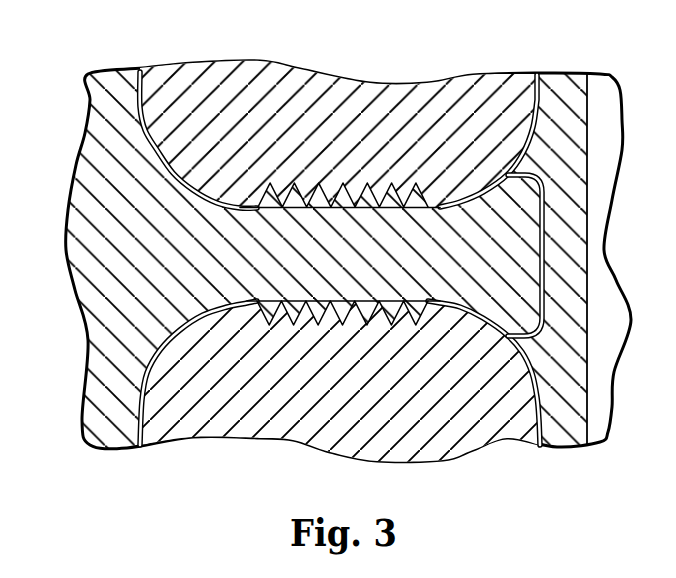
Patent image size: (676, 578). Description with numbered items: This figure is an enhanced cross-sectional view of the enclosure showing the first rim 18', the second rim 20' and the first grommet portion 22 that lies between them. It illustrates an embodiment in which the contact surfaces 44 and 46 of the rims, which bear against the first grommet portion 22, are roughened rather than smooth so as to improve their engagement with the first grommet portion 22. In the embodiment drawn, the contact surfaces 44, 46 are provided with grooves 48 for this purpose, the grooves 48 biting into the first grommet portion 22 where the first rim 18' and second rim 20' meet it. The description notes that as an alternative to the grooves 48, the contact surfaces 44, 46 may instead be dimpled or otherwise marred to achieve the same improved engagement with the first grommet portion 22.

The first rim 18' is at (338, 118).
The second rim 20' is at (340, 403).
The first grommet portion 22 is at (153, 248).
The contact surface 44 is at (243, 197).
The contact surface 46 is at (248, 310).
The grooves 48 is at (300, 193).